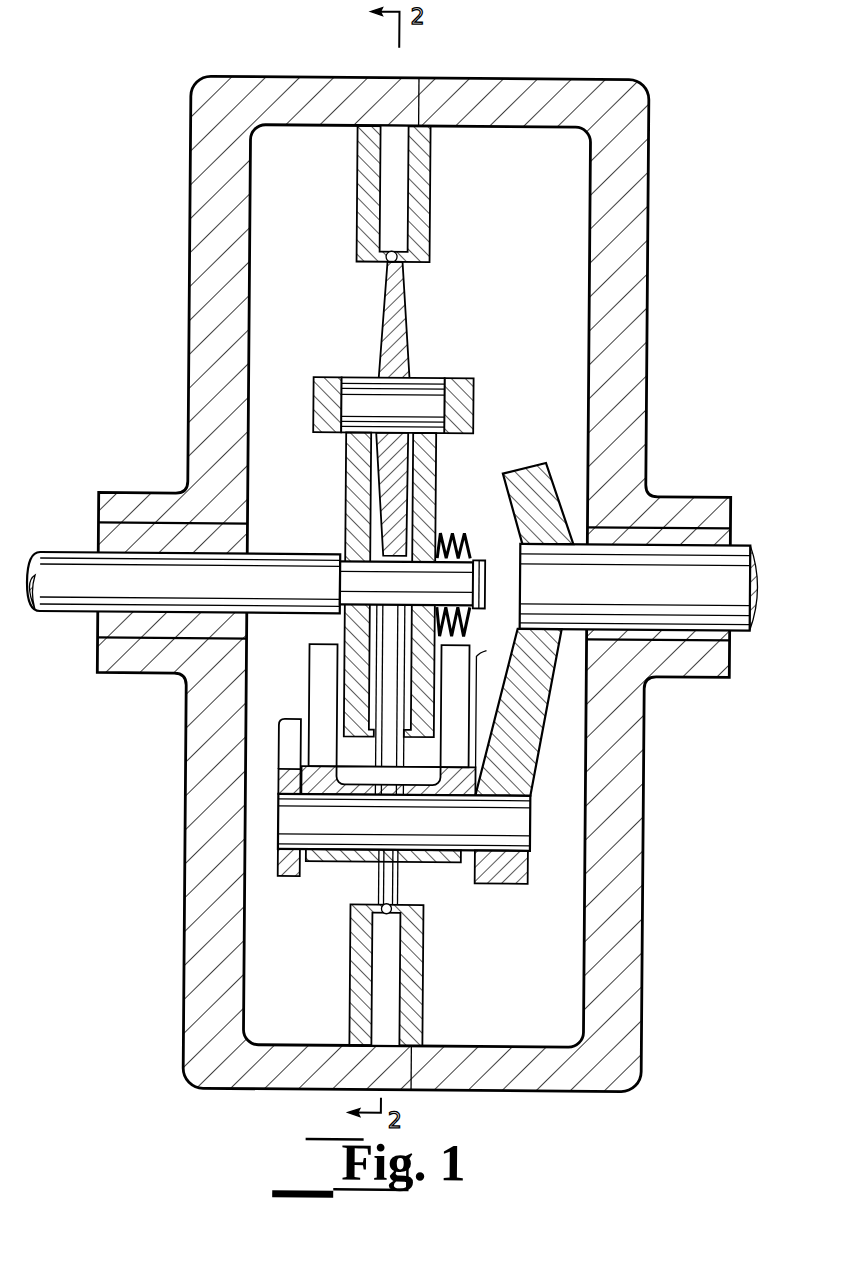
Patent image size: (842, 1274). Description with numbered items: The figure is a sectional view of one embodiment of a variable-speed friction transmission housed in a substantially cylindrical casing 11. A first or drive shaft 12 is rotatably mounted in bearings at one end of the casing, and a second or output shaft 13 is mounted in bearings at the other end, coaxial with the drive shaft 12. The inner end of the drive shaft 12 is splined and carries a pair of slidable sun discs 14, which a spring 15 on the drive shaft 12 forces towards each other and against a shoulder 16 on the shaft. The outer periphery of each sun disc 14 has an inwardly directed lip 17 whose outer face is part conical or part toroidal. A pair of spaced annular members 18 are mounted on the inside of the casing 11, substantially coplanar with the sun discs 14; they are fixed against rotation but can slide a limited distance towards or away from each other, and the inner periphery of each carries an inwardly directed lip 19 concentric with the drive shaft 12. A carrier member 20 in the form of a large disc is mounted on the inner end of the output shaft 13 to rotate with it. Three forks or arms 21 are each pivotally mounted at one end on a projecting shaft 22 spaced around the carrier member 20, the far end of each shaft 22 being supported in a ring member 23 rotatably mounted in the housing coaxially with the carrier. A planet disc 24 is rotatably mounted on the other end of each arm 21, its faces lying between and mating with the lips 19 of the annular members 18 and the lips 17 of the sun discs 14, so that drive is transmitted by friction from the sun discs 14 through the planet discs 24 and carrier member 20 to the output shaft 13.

The casing 11 is at (642, 220).
The drive shaft 12 is at (62, 614).
The output shaft 13 is at (762, 628).
The sun discs 14 is at (358, 518).
The spring 15 is at (450, 534).
The shoulder 16 is at (345, 607).
The lips 17 is at (403, 432).
The annular members 18 is at (383, 230).
The lip 19 is at (383, 262).
The carrier member 20 is at (537, 695).
The forks or arms 21 is at (452, 698).
The projecting shaft 22 is at (468, 855).
The ring member 23 is at (296, 878).
The planet disc 24 is at (400, 349).